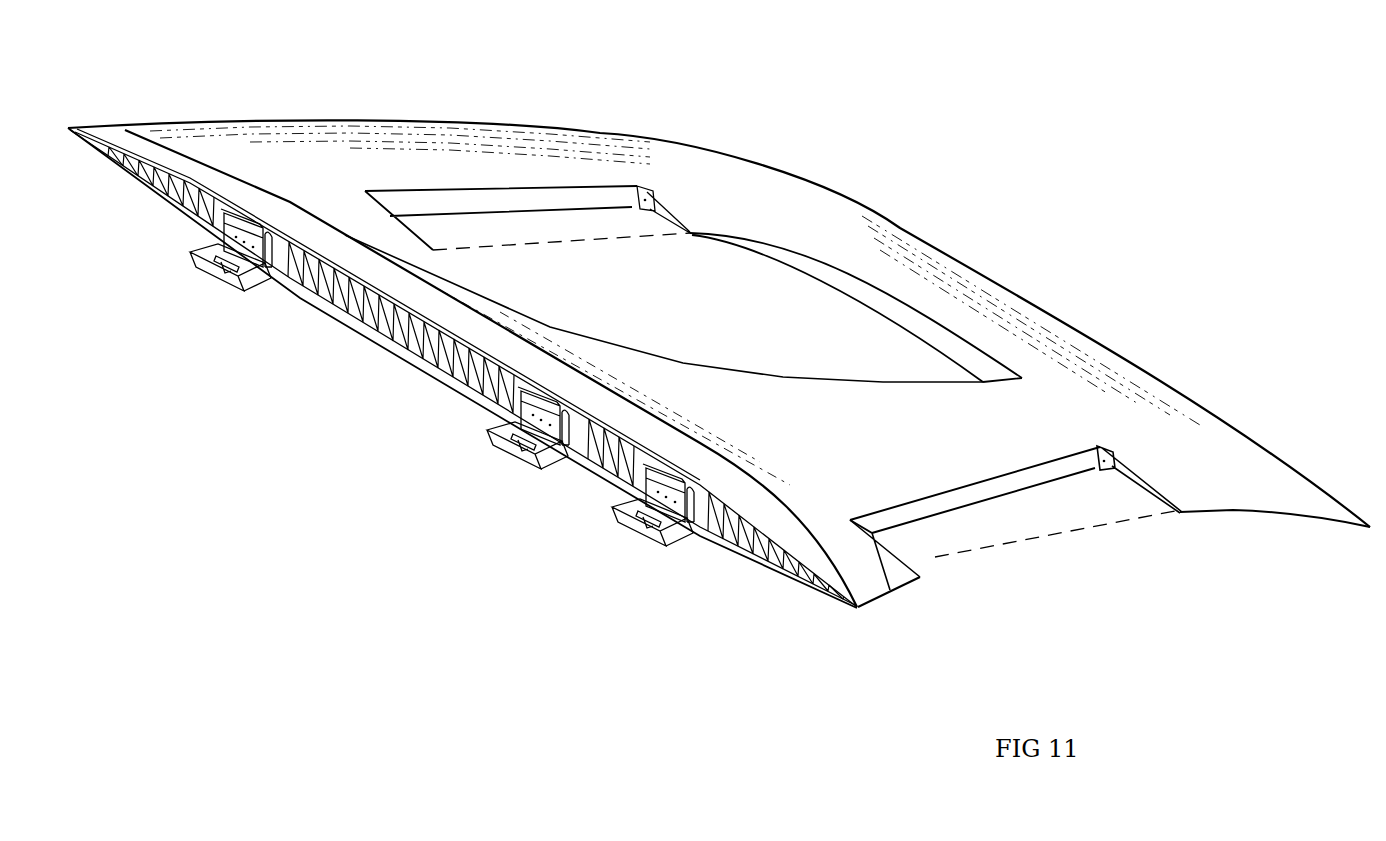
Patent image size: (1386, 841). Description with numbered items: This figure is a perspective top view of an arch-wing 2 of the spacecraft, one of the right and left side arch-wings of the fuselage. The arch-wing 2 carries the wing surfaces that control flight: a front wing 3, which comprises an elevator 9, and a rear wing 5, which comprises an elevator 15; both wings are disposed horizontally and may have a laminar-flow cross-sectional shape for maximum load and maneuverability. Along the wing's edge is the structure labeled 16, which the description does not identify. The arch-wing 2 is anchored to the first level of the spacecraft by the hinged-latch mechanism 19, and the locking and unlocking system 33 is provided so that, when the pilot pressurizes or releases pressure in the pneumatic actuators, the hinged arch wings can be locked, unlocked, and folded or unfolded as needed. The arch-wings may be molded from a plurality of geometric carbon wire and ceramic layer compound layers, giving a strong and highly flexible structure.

The arch-wing 2 is at (893, 247).
The front wing 3 is at (435, 175).
The elevator 9 is at (552, 225).
The rear wing 5 is at (918, 455).
The elevator 15 is at (1063, 505).
The leading edge truss spar 16 is at (410, 353).
The hinged-latch mechanism 19 is at (300, 293).
The locking and unlocking system 33 is at (243, 294).